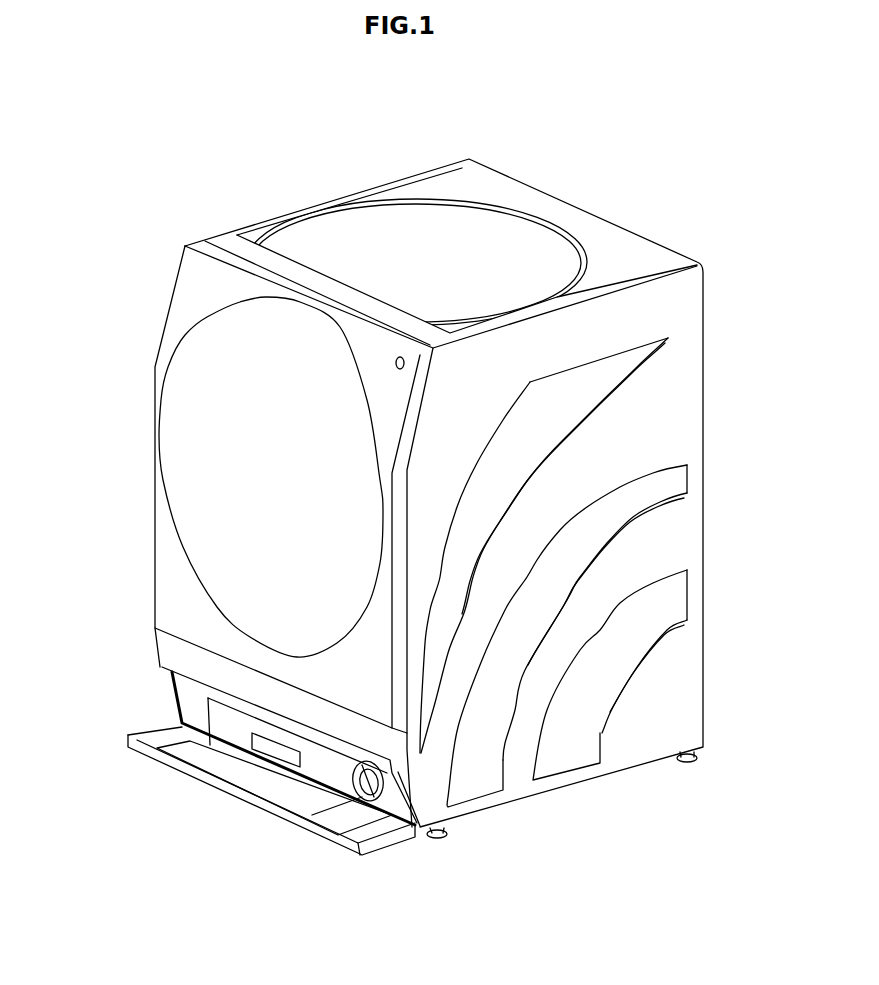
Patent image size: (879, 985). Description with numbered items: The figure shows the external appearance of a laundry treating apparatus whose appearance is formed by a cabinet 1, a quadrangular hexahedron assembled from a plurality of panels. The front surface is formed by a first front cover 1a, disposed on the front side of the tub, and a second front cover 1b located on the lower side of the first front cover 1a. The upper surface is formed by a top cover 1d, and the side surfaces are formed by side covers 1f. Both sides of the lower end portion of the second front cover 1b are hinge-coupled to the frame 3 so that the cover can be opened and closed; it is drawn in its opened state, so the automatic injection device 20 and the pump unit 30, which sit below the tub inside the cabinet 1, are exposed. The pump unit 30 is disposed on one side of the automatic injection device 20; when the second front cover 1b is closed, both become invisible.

The cabinet 1 is at (684, 204).
The first front cover 1a is at (170, 596).
The second front cover 1b is at (137, 733).
The top cover 1d is at (412, 188).
The side cover 1f is at (650, 693).
The frame 3 is at (417, 827).
The automatic injection device 20 is at (268, 754).
The pump unit 30 is at (361, 805).